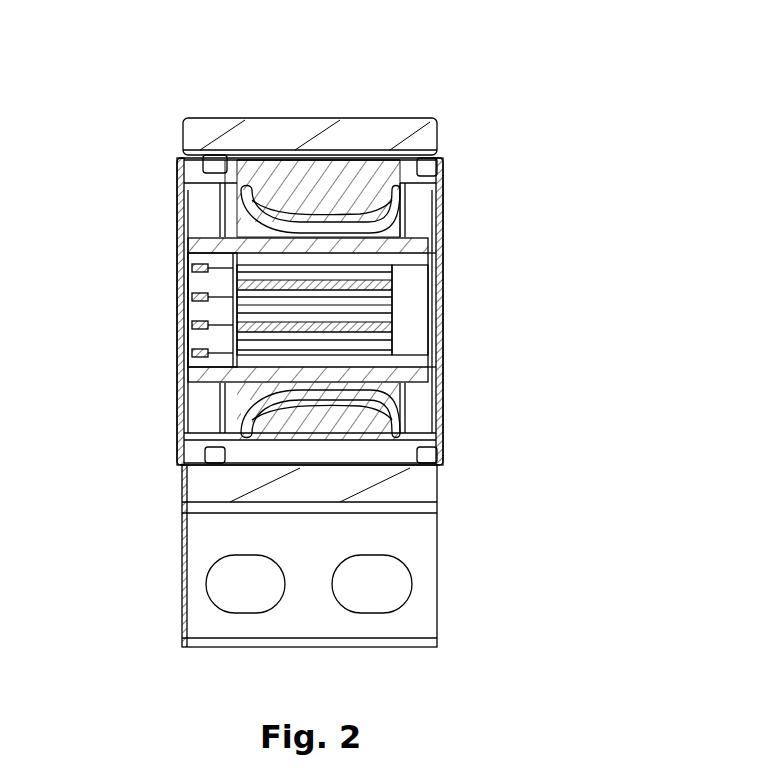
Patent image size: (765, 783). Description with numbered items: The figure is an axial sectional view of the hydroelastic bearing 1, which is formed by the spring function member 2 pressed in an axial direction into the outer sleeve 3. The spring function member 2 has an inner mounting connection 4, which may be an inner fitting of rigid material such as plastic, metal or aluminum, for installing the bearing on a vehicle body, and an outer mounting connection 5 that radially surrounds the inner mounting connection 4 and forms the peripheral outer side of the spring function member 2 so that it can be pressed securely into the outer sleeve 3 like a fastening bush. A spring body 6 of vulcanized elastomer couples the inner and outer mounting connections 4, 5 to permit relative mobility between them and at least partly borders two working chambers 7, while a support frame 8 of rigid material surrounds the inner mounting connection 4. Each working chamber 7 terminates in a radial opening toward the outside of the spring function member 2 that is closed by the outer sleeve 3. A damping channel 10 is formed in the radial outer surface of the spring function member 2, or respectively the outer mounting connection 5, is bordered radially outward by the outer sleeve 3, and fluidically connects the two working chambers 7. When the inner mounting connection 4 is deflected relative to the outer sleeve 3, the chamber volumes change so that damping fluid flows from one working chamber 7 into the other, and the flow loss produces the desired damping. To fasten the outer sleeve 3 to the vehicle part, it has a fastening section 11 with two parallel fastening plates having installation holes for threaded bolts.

The hydroelastic bearing 1 is at (599, 96).
The spring function member 2 is at (446, 195).
The outer sleeve 3 is at (186, 133).
The inner mounting connection 4 is at (440, 370).
The outer mounting connection 5 is at (354, 154).
The spring body 6 is at (444, 242).
The working chambers 7 is at (193, 250).
The support frame 8 is at (307, 195).
The damping channel 10 is at (213, 462).
The fastening section 11 is at (420, 613).